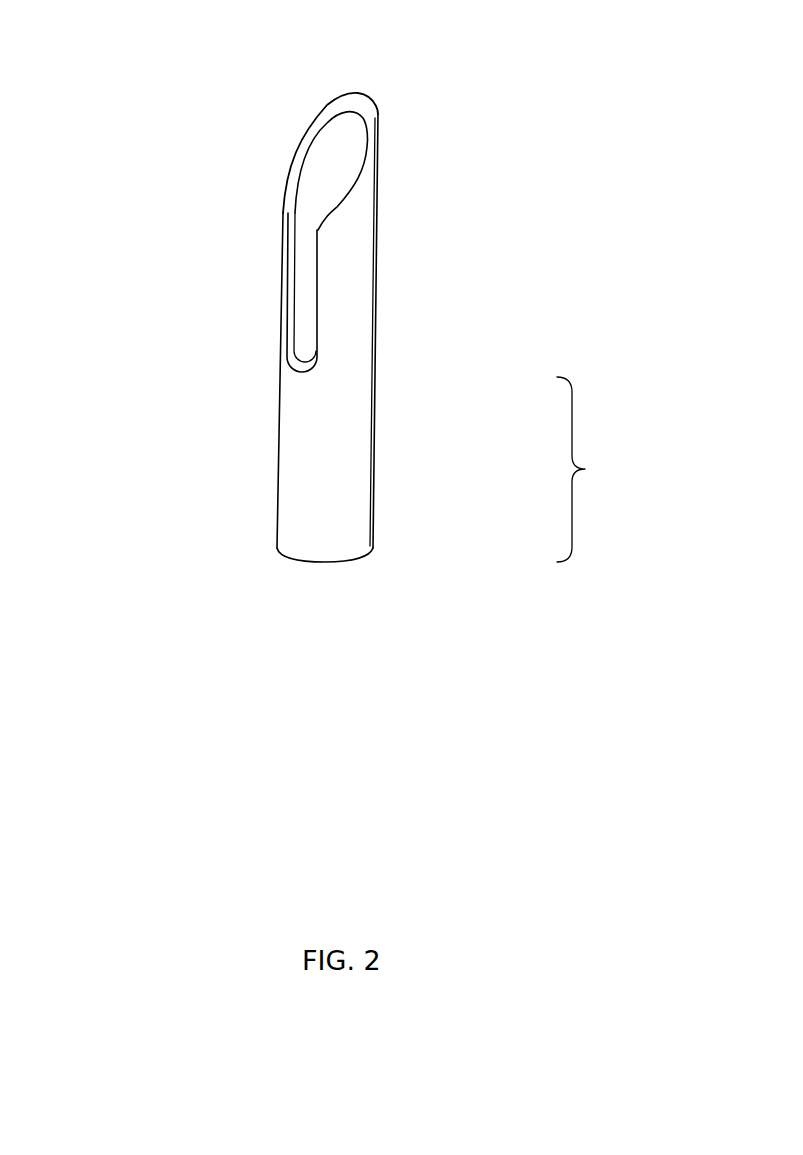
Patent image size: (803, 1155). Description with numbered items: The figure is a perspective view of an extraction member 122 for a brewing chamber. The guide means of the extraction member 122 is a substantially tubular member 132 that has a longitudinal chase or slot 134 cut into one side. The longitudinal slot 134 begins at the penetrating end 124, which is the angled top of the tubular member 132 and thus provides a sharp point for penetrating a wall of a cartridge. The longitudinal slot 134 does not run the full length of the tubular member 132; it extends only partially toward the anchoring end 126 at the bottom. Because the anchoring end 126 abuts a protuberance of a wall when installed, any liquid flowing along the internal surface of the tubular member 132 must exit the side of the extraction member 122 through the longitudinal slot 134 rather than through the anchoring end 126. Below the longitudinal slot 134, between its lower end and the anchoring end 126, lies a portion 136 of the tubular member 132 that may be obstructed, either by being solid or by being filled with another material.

The extraction member 122 is at (288, 112).
The penetrating end 124 is at (378, 105).
The anchoring end 126 is at (370, 552).
The tubular member 132 is at (343, 350).
The longitudinal slot 134 is at (295, 290).
The portion 136 is at (600, 469).